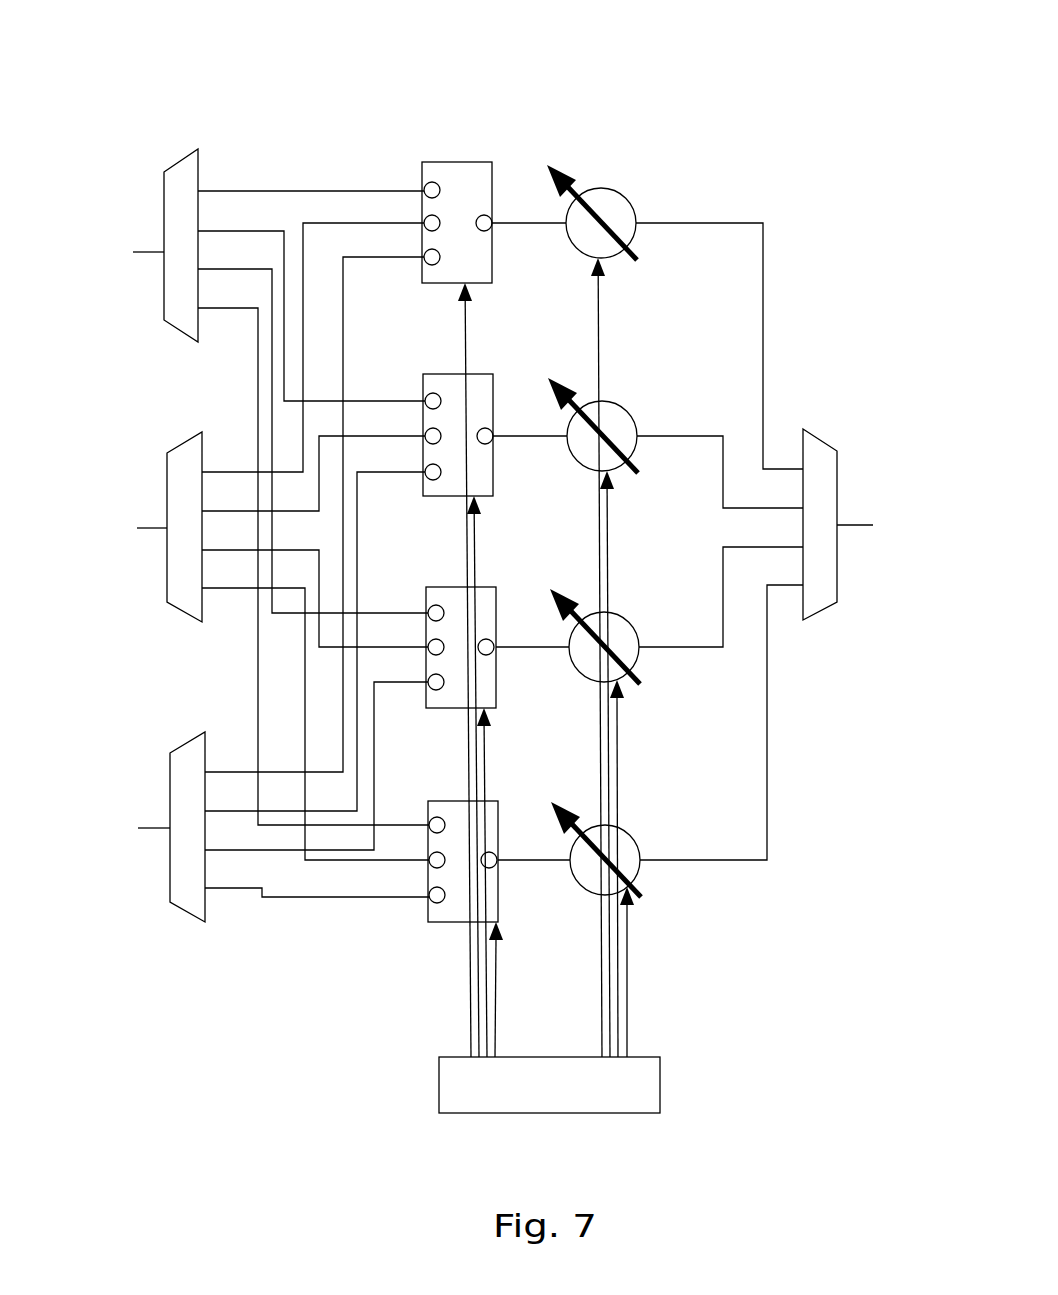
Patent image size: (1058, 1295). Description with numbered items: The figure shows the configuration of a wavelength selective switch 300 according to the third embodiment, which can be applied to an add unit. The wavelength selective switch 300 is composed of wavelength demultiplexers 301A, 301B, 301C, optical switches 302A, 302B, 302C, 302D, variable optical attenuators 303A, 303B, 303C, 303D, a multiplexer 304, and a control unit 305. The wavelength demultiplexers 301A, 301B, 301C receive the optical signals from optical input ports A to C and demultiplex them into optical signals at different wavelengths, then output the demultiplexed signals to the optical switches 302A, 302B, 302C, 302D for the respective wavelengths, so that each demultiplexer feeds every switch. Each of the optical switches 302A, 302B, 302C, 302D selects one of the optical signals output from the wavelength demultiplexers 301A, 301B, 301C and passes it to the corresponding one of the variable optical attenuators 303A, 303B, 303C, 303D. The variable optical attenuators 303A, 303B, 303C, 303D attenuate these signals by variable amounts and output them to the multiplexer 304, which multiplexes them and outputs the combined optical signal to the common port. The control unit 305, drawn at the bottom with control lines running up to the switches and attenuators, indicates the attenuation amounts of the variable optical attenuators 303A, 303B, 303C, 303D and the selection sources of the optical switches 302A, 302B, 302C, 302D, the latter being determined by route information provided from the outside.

The wavelength selective switch 300 is at (553, 33).
The wavelength demultiplexer 301A is at (182, 157).
The wavelength demultiplexer 301B is at (185, 439).
The wavelength demultiplexer 301C is at (188, 739).
The optical switch 302A is at (452, 160).
The optical switch 302B is at (453, 372).
The optical switch 302C is at (457, 585).
The optical switch 302D is at (457, 799).
The variable optical attenuator 303A is at (643, 173).
The variable optical attenuator 303B is at (645, 384).
The variable optical attenuator 303C is at (647, 596).
The variable optical attenuator 303D is at (658, 815).
The multiplexer 304 is at (818, 438).
The control unit 305 is at (645, 1056).